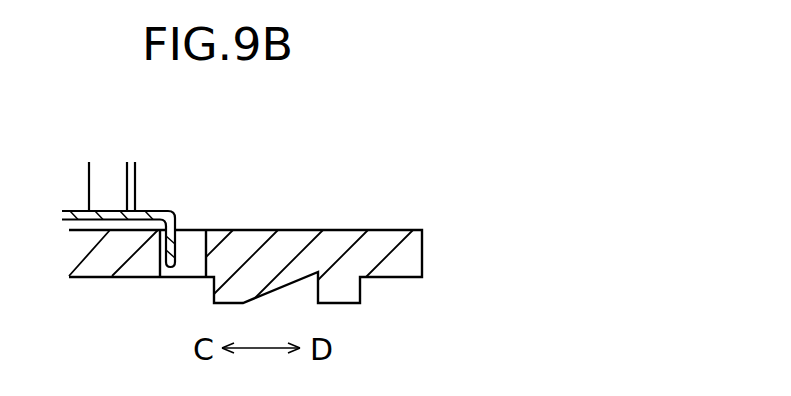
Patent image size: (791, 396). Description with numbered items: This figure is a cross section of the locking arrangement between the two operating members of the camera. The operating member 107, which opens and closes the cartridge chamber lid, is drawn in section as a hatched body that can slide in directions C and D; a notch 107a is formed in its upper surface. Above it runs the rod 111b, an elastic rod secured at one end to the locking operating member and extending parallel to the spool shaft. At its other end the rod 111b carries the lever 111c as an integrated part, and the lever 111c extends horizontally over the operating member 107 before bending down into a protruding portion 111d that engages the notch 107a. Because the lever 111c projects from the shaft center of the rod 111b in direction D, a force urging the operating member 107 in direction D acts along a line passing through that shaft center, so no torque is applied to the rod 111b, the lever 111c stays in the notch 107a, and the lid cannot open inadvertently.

The operating member 107 is at (415, 260).
The notch 107a is at (190, 265).
The rod 111b is at (137, 180).
The lever 111c is at (77, 210).
The protruding portion 111d is at (182, 257).